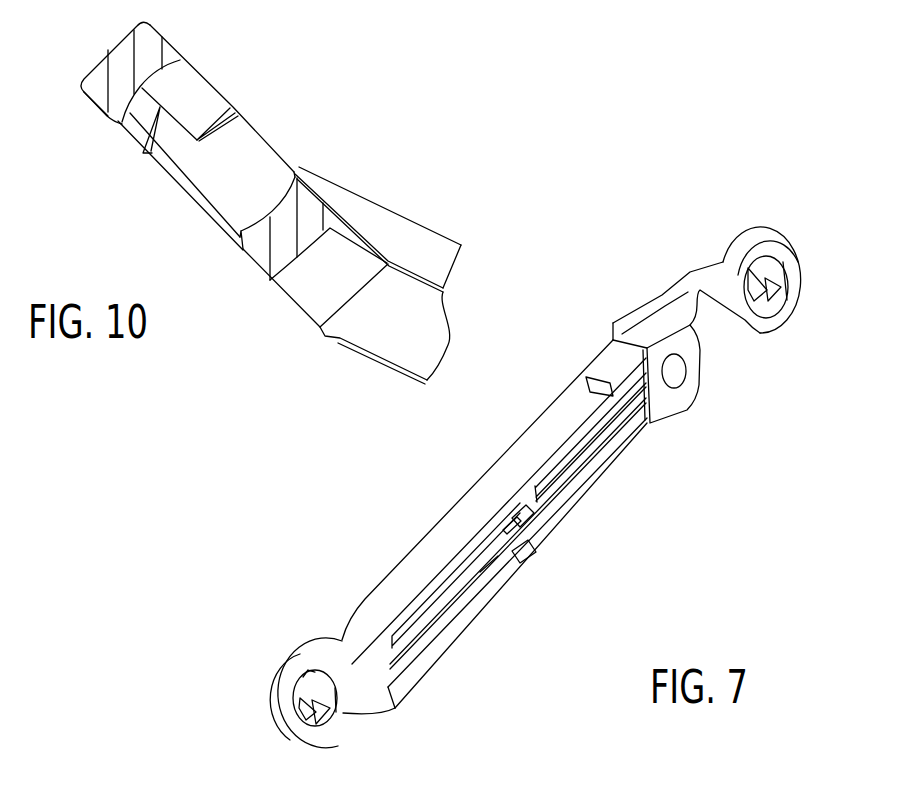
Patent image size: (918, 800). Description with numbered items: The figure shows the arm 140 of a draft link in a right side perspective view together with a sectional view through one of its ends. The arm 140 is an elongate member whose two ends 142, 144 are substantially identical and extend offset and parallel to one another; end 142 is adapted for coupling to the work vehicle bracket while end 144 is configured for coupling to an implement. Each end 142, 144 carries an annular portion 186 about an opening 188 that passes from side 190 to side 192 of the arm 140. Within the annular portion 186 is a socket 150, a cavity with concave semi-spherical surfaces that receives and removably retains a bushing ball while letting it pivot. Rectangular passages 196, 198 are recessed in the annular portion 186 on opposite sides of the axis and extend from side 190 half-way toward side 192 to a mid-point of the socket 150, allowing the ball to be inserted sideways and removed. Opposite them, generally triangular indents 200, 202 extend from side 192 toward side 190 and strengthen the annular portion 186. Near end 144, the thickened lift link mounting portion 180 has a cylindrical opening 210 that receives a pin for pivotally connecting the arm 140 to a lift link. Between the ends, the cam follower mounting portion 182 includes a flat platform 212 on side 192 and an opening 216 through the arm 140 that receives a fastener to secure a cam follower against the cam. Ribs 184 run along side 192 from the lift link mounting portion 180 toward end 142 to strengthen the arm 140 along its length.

In FIG. 10, the arm 140 is at (64, 70).
In FIG. 7, the arm 140 is at (378, 578).
In FIG. 10, the end 142 is at (89, 131).
In FIG. 7, the end 142 is at (263, 665).
In FIG. 7, the end 144 is at (820, 221).
In FIG. 10, the socket 150 is at (277, 210).
In FIG. 7, the socket 150 is at (773, 287).
In FIG. 7, the lift link mounting portion 180 is at (629, 300).
In FIG. 7, the cam follower mounting portion 182 is at (429, 526).
In FIG. 7, the ribs 184 is at (552, 478).
In FIG. 10, the annular portion 186 is at (120, 53).
In FIG. 7, the annular portion 186 is at (780, 228).
In FIG. 10, the opening 188 is at (236, 236).
In FIG. 7, the opening 188 is at (786, 278).
In FIG. 10, the side 190 is at (328, 190).
In FIG. 10, the side 192 is at (287, 307).
In FIG. 7, the side 192 is at (594, 521).
In FIG. 7, the passage 196 is at (753, 292).
In FIG. 10, the passage 198 is at (190, 93).
In FIG. 7, the indent 200 is at (765, 302).
In FIG. 10, the indent 202 is at (137, 135).
In FIG. 7, the indent 202 is at (305, 676).
In FIG. 7, the opening 210 is at (676, 383).
In FIG. 7, the platform 212 is at (513, 520).
In FIG. 7, the opening 216 is at (500, 577).